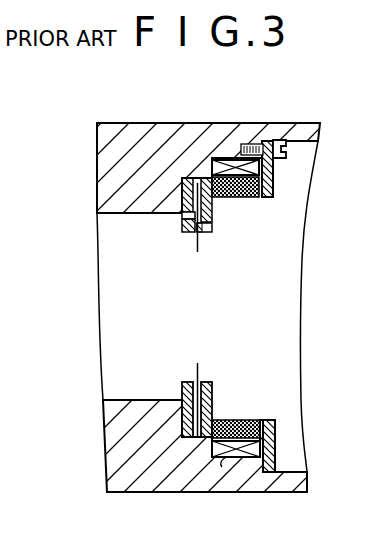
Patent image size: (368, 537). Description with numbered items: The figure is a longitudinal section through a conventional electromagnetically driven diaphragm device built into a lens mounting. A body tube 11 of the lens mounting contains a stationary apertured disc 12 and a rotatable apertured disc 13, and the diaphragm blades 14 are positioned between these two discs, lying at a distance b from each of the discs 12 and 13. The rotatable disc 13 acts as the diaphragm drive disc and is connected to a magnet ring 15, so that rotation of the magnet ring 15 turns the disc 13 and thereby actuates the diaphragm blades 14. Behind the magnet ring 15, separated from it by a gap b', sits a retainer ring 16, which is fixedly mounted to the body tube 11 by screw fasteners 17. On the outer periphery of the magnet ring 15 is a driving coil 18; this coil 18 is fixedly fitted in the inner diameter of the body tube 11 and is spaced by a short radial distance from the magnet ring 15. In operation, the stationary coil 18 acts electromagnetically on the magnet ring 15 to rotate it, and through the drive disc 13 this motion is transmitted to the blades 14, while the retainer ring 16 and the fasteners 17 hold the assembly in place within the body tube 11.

The body tube 11 is at (239, 420).
The stationary apertured disc 12 is at (183, 177).
The rotatable apertured disc 13 is at (203, 177).
The diaphragm blades 14 is at (197, 243).
The magnet ring 15 is at (233, 198).
The retainer ring 16 is at (278, 190).
The screw fasteners 17 is at (293, 140).
The driving coil 18 is at (233, 160).
The distance b is at (181, 397).
The gap b' is at (268, 417).